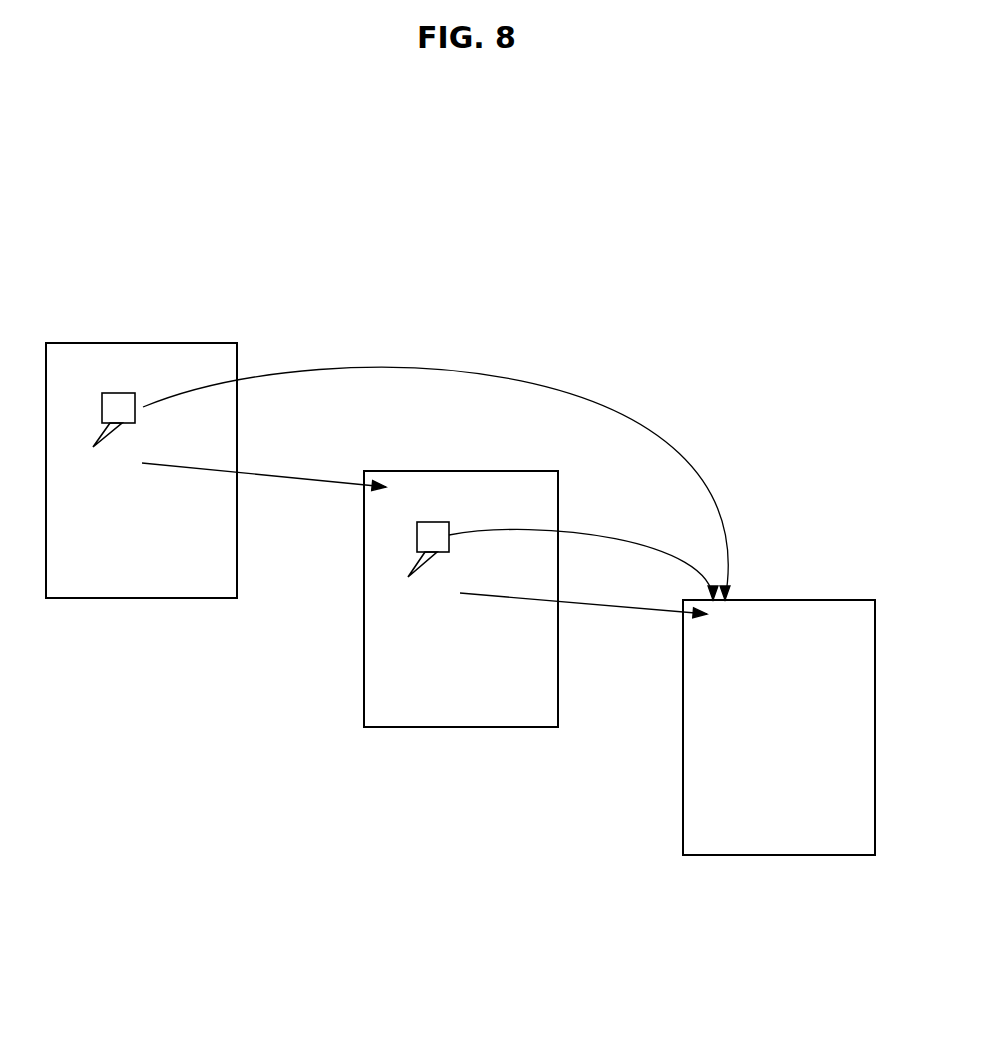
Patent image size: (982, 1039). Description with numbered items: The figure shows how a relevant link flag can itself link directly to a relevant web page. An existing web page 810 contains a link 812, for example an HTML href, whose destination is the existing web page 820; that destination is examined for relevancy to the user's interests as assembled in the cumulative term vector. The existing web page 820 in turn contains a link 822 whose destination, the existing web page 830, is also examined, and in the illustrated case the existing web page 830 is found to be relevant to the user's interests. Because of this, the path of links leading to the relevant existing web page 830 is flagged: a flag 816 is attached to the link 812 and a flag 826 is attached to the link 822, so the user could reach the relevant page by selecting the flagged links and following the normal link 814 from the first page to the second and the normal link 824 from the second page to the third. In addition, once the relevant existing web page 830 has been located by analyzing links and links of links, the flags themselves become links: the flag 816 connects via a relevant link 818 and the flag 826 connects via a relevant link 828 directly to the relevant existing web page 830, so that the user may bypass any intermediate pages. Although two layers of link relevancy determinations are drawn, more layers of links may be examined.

The existing web page 810 is at (210, 592).
The link 812 is at (134, 476).
The normal link 814 is at (303, 480).
The flag 816 is at (117, 393).
The relevant link 818 is at (557, 383).
The existing web page 820 is at (528, 721).
The link 822 is at (451, 604).
The normal link 824 is at (620, 610).
The flag 826 is at (514, 499).
The relevant link 828 is at (618, 532).
The relevant existing web page 830 is at (827, 849).